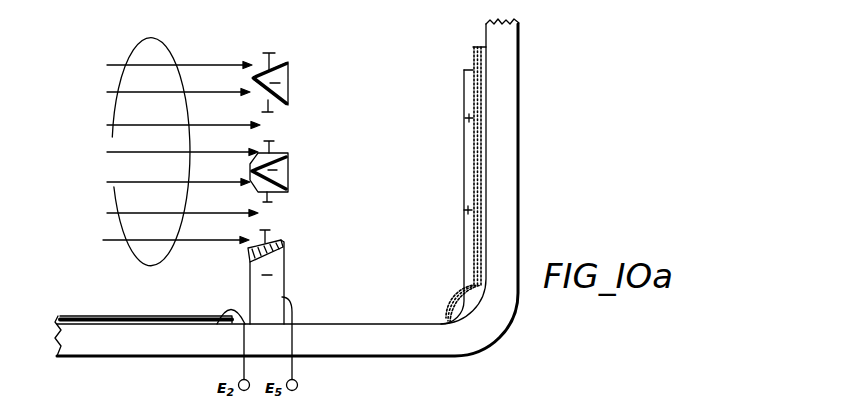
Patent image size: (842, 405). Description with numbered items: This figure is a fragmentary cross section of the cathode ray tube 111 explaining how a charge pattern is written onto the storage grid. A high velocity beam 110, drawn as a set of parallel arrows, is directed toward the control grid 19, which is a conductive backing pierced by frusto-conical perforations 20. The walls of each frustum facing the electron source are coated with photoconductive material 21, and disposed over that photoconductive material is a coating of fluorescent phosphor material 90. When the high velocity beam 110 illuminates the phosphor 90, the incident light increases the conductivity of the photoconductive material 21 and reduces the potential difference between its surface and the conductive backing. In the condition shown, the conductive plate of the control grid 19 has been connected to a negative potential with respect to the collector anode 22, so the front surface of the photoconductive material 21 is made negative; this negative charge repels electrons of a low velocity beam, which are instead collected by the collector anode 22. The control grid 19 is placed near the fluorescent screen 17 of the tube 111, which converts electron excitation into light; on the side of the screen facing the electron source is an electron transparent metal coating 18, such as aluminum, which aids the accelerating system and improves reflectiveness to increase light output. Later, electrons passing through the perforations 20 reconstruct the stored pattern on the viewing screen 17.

The fluorescent screen 17 is at (477, 49).
The electron transparent metal coating 18 is at (468, 172).
The control grid 19 is at (278, 284).
The perforations 20 is at (283, 121).
The photoconductive material 21 is at (288, 63).
The collector anode 22 is at (98, 314).
The fluorescent phosphor material 90 is at (253, 74).
The high velocity beam 110 is at (108, 202).
The cathode ray tube 111 is at (505, 128).